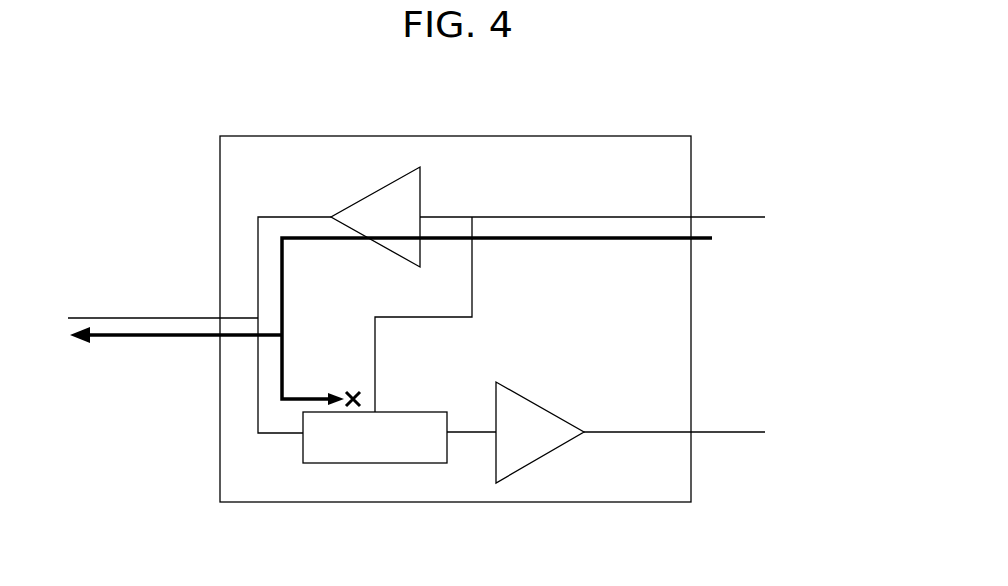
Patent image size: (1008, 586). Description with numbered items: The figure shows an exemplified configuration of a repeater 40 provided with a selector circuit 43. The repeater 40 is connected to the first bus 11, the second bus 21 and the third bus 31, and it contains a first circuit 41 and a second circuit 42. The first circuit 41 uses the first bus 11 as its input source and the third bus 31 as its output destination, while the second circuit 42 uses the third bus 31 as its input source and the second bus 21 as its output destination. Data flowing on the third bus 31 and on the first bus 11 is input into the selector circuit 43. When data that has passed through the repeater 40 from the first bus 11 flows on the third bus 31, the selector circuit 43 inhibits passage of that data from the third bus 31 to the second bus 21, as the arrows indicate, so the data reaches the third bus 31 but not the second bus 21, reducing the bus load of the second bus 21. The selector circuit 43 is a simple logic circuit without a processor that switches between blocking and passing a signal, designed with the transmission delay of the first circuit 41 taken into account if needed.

The repeater 40 is at (455, 319).
The first circuit 41 is at (421, 192).
The second circuit 42 is at (543, 403).
The selector circuit 43 is at (375, 437).
The first bus 11 is at (714, 218).
The second bus 21 is at (714, 438).
The third bus 31 is at (123, 305).